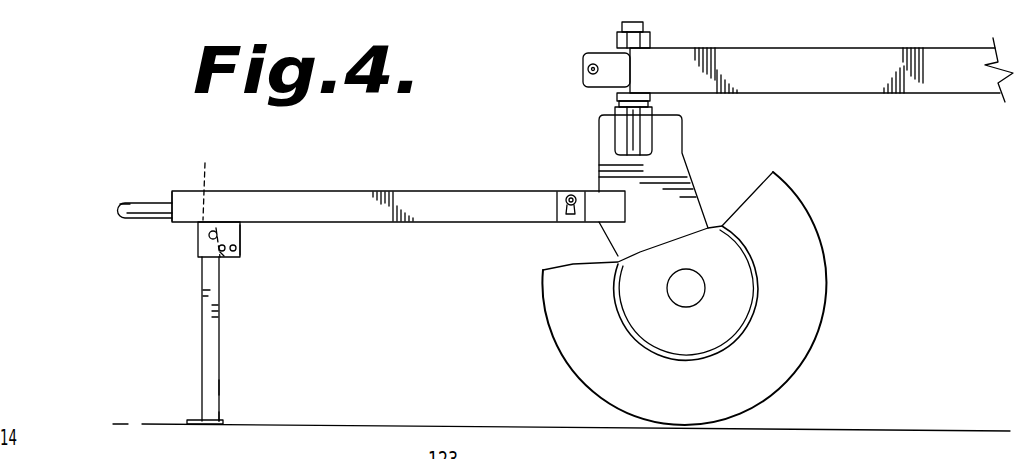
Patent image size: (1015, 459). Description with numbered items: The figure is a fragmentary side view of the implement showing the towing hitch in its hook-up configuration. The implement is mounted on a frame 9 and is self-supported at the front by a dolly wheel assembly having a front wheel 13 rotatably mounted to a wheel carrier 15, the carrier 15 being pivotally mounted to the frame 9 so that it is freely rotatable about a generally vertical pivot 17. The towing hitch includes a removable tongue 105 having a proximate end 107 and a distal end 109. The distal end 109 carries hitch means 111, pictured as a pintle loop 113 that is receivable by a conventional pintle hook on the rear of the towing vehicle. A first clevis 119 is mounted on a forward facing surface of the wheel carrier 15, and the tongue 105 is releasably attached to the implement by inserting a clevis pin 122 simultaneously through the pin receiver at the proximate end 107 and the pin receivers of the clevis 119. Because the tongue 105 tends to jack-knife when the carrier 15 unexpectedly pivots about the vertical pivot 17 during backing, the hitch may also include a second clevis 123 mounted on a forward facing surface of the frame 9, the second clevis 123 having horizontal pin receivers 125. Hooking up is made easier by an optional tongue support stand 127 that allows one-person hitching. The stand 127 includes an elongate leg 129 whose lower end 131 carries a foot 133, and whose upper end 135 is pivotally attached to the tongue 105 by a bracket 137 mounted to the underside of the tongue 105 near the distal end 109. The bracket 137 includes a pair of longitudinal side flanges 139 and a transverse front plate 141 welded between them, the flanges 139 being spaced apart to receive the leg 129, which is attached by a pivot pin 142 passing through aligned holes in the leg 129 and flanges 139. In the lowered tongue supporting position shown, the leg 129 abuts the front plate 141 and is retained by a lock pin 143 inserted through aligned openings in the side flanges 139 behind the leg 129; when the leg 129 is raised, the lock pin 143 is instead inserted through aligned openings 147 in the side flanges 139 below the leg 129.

The frame 9 is at (765, 48).
The front wheel 13 is at (807, 210).
The wheel carrier 15 is at (688, 172).
The vertical pivot 17 is at (636, 22).
The removable tongue 105 is at (383, 191).
The proximate end 107 is at (556, 191).
The distal end 109 is at (170, 191).
The hitch means 111 is at (133, 219).
The pintle loop 113 is at (126, 203).
The first clevis 119 is at (585, 191).
The clevis pin 122 is at (566, 212).
The second clevis 123 is at (597, 53).
The horizontal pin receivers 125 is at (585, 71).
The tongue support stand 127 is at (231, 354).
The elongate leg 129 is at (220, 388).
The lower end 131 is at (220, 418).
The foot 133 is at (187, 420).
The upper end 135 is at (213, 197).
The bracket 137 is at (242, 232).
The longitudinal side flanges 139 is at (236, 251).
The transverse front plate 141 is at (197, 233).
The pivot pin 142 is at (215, 231).
The lock pin 143 is at (224, 252).
The aligned openings 147 is at (238, 247).